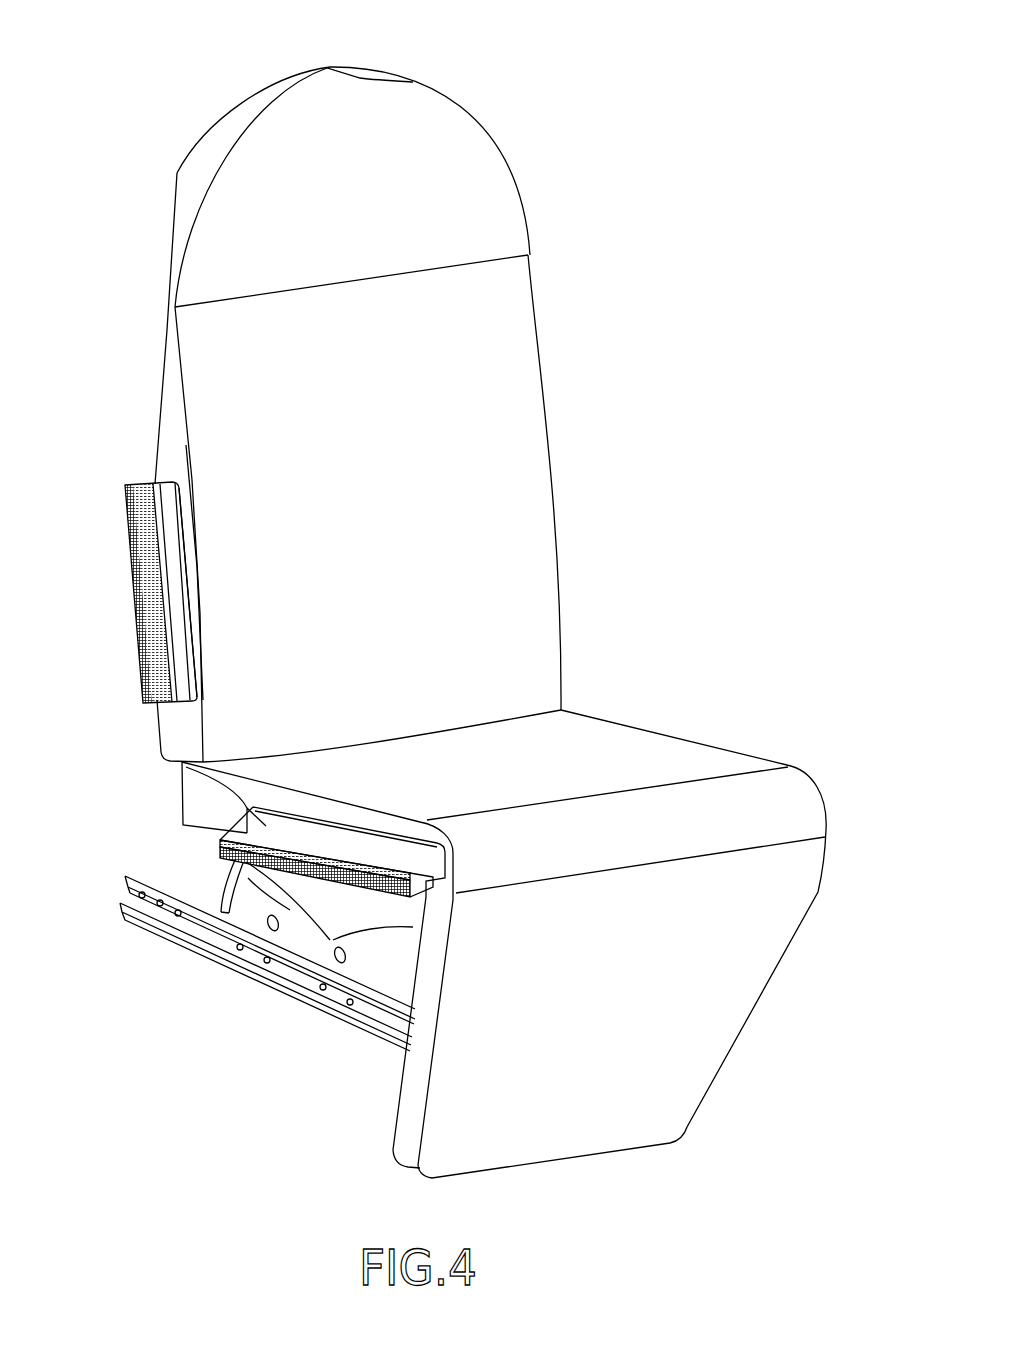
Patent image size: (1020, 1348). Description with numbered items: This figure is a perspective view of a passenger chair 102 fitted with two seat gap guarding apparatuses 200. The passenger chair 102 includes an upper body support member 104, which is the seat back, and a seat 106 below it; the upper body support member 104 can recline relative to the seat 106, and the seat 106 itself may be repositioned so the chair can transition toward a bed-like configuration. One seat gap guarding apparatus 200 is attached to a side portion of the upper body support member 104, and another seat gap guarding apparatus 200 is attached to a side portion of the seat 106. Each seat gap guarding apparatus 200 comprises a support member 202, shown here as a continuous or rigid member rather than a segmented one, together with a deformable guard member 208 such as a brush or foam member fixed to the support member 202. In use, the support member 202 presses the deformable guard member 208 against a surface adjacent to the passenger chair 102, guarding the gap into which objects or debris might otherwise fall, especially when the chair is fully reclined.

The passenger chair 102 is at (430, 589).
The upper body support member 104 is at (501, 444).
The seat 106 is at (627, 752).
The seat gap guarding apparatus 200 is at (236, 682).
The support member 202 is at (175, 585).
The deformable guard member 208 is at (135, 597).